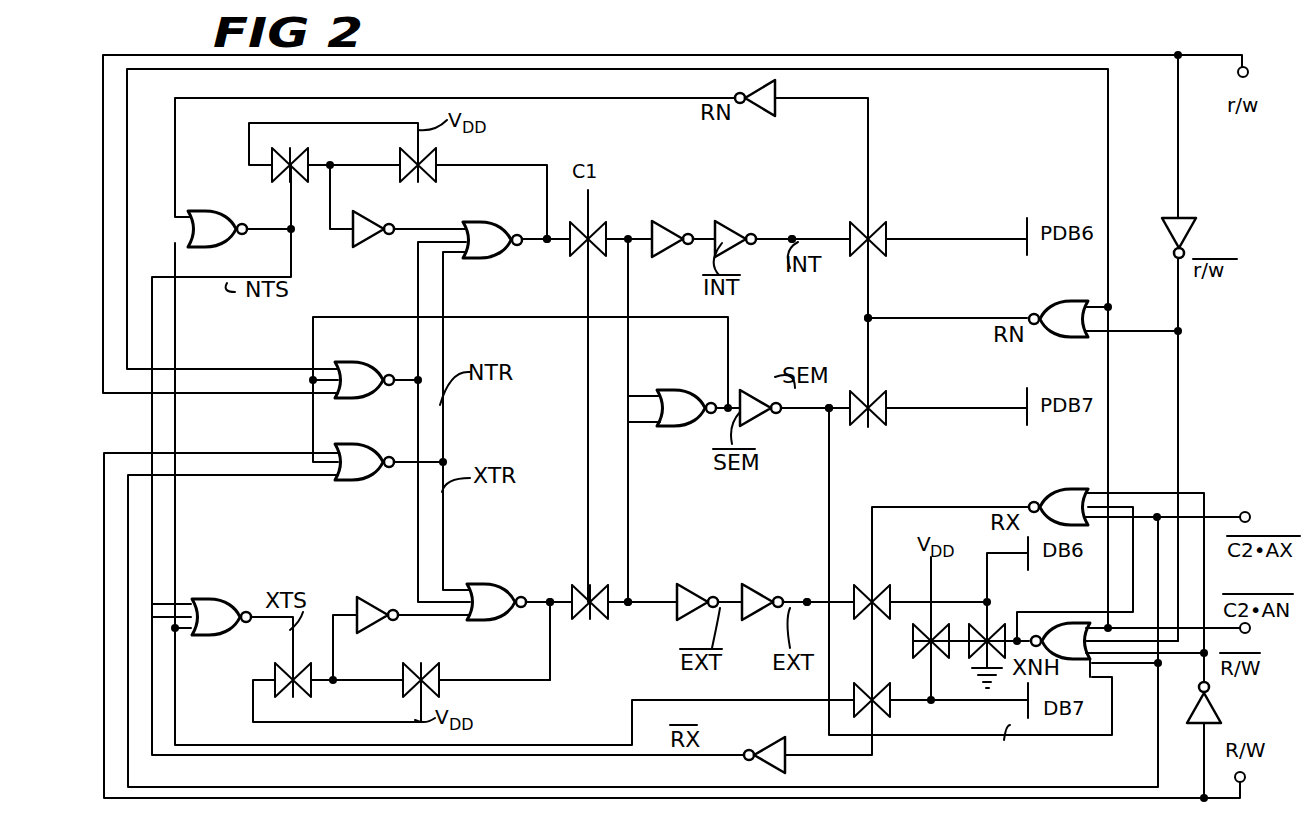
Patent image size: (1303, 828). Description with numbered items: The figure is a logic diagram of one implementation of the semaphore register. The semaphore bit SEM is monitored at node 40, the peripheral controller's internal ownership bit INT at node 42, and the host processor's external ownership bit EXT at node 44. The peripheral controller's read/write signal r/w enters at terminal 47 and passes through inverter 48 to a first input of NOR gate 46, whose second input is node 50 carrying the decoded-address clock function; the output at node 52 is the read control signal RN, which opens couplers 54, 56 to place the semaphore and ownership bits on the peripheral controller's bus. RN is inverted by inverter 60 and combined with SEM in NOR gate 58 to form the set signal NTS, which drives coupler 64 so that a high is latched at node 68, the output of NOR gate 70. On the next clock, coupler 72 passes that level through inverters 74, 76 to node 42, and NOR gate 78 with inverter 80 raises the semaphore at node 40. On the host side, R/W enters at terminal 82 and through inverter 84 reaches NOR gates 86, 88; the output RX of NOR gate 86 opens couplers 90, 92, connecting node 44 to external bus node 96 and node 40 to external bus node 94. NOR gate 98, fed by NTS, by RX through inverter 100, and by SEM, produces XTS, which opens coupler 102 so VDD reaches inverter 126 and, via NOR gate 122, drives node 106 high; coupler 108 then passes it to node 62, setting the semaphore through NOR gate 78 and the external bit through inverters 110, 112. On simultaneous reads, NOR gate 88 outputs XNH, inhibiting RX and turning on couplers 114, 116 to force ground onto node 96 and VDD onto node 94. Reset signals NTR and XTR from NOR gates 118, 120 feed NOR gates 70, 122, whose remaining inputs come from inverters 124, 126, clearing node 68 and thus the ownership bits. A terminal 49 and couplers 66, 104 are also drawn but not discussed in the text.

The node 40 is at (826, 412).
The node 42 is at (792, 234).
The node 44 is at (806, 597).
The NOR gate 46 is at (1066, 298).
The terminal 47 is at (1237, 74).
The inverter 48 is at (1190, 217).
The C2·AX input terminal 49 is at (1242, 512).
The node 50 is at (1250, 631).
The node 52 is at (864, 320).
The coupler 54 is at (888, 228).
The coupler 56 is at (882, 422).
The NOR gate 58 is at (222, 246).
The inverter 60 is at (775, 104).
The node 62 is at (632, 606).
The coupler 64 is at (268, 178).
The transistor 66 is at (437, 172).
The node 68 is at (544, 244).
The NOR gate 70 is at (482, 260).
The coupler 72 is at (606, 228).
The inverter 74 is at (670, 250).
The inverter 76 is at (733, 225).
The NOR gate 78 is at (692, 426).
The inverter 80 is at (752, 388).
The terminal 82 is at (1246, 780).
The inverter 84 is at (1190, 715).
The NOR gate 86 is at (1062, 488).
The NOR gate 88 is at (1070, 623).
The coupler 90 is at (898, 575).
The coupler 92 is at (853, 702).
The node 94 is at (928, 716).
The node 96 is at (983, 598).
The NOR gate 98 is at (230, 600).
The inverter 100 is at (765, 742).
The coupler 102 is at (274, 672).
The transistor 104 is at (440, 667).
The node 106 is at (548, 600).
The coupler 108 is at (598, 620).
The inverter 110 is at (695, 585).
The inverter 112 is at (760, 618).
The coupler 114 is at (997, 623).
The coupler 116 is at (940, 660).
The NOR gate 118 is at (370, 348).
The NOR gate 120 is at (380, 492).
The NOR gate 122 is at (490, 586).
The inverter 124 is at (375, 242).
The inverter 126 is at (365, 600).